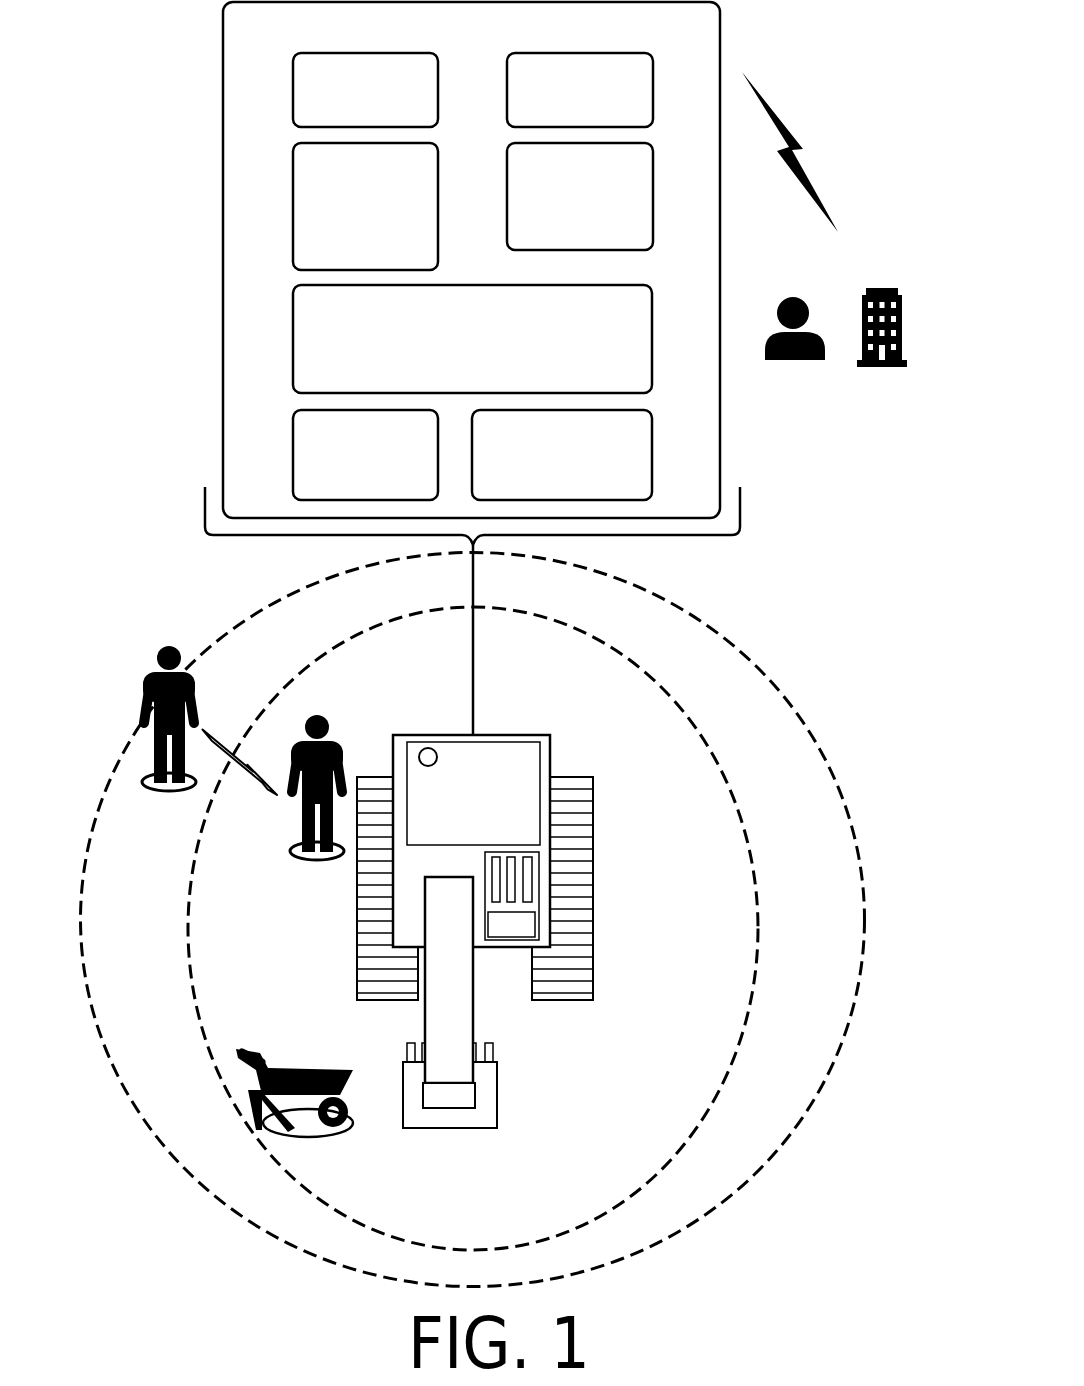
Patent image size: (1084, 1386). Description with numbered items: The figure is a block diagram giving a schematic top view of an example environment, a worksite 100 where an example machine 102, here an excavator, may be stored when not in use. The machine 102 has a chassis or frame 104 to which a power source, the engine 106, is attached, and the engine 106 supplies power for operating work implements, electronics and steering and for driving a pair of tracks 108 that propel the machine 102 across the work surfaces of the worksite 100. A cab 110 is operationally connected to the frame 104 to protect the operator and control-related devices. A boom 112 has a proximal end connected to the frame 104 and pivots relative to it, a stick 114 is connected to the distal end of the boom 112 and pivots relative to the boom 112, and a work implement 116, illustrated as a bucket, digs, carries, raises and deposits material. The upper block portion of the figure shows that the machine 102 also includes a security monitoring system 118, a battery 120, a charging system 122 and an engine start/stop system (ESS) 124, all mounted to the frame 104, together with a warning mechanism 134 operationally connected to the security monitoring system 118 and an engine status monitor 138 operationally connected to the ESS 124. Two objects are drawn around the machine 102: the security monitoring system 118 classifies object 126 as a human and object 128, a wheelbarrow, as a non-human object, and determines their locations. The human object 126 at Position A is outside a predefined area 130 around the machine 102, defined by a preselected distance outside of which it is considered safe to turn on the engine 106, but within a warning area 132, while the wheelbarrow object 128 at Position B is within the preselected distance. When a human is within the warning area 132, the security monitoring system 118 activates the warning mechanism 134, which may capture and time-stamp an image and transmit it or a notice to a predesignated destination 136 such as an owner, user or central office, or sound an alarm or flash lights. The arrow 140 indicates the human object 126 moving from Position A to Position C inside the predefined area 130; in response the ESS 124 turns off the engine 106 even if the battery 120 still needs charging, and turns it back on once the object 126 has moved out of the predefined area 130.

The worksite 100 is at (174, 63).
The machine 102 is at (540, 33).
The frame 104 is at (498, 733).
The engine 106 is at (385, 118).
The tracks 108 is at (370, 985).
The cab 110 is at (527, 908).
The boom 112 is at (473, 1022).
The stick 114 is at (473, 1093).
The work implement 116 is at (497, 1098).
The security monitoring system 118 is at (385, 260).
The battery 120 is at (600, 118).
The charging system 122 is at (600, 236).
The engine start/stop system (ESS) 124 is at (492, 380).
The object (human) 126 is at (243, 748).
The object (wheelbarrow) 128 is at (294, 1100).
The predefined area 130 is at (760, 945).
The warning area 132 is at (742, 650).
The warning mechanism 134 is at (385, 495).
The predesignated destination 136 is at (842, 376).
The engine status monitor 138 is at (580, 495).
The arrow 140 is at (240, 772).